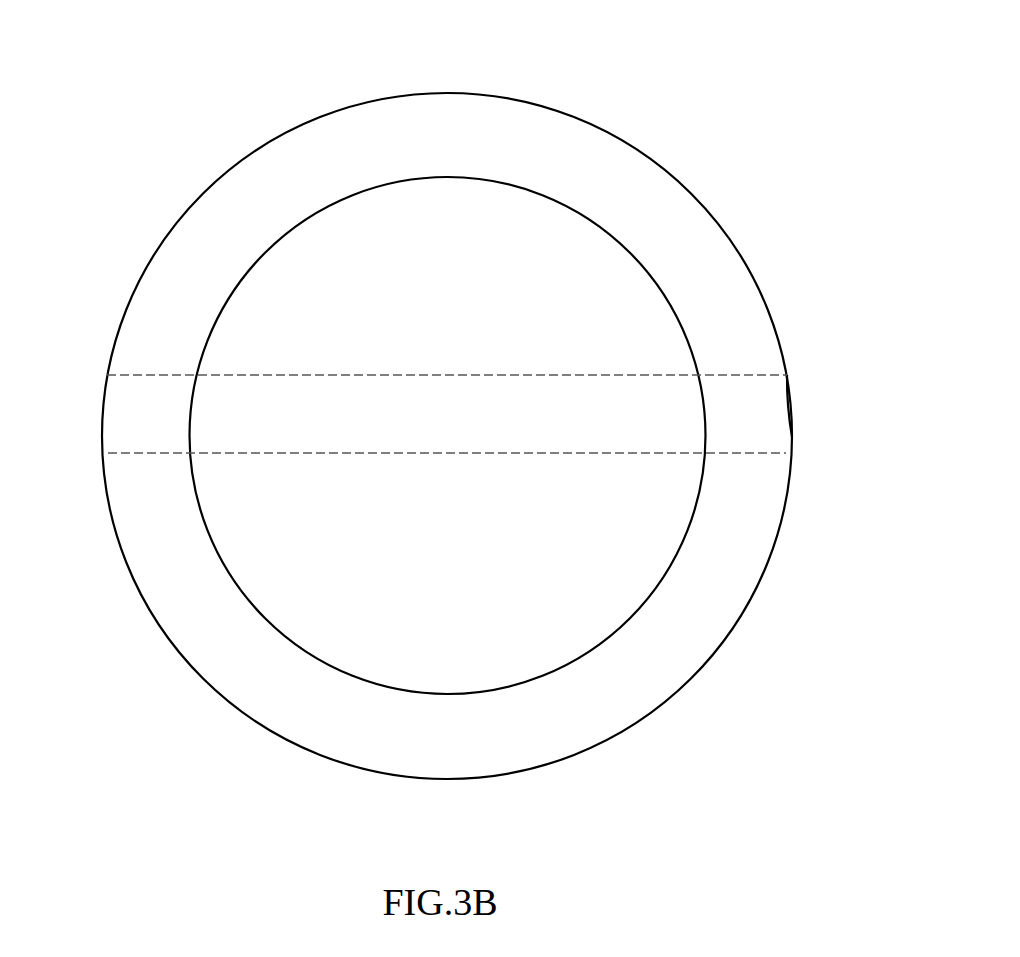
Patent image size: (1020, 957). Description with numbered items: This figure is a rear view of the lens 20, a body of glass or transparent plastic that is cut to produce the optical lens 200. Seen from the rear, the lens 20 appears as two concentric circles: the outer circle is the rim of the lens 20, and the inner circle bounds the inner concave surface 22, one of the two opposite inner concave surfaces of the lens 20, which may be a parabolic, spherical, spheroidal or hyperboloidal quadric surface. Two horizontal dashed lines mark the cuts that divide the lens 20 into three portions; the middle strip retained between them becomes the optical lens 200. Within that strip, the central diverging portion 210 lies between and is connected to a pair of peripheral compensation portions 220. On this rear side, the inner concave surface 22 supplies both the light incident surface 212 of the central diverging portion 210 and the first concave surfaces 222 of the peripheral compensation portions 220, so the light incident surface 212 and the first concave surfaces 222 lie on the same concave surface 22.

The lens 20 is at (565, 104).
The inner concave surface 22 is at (305, 260).
The optical lens 200 is at (801, 389).
The peripheral compensation portion 220 is at (124, 415).
The first concave surface 222 is at (155, 405).
The light incident surface 212 is at (387, 429).
The central diverging portion 210 is at (474, 431).